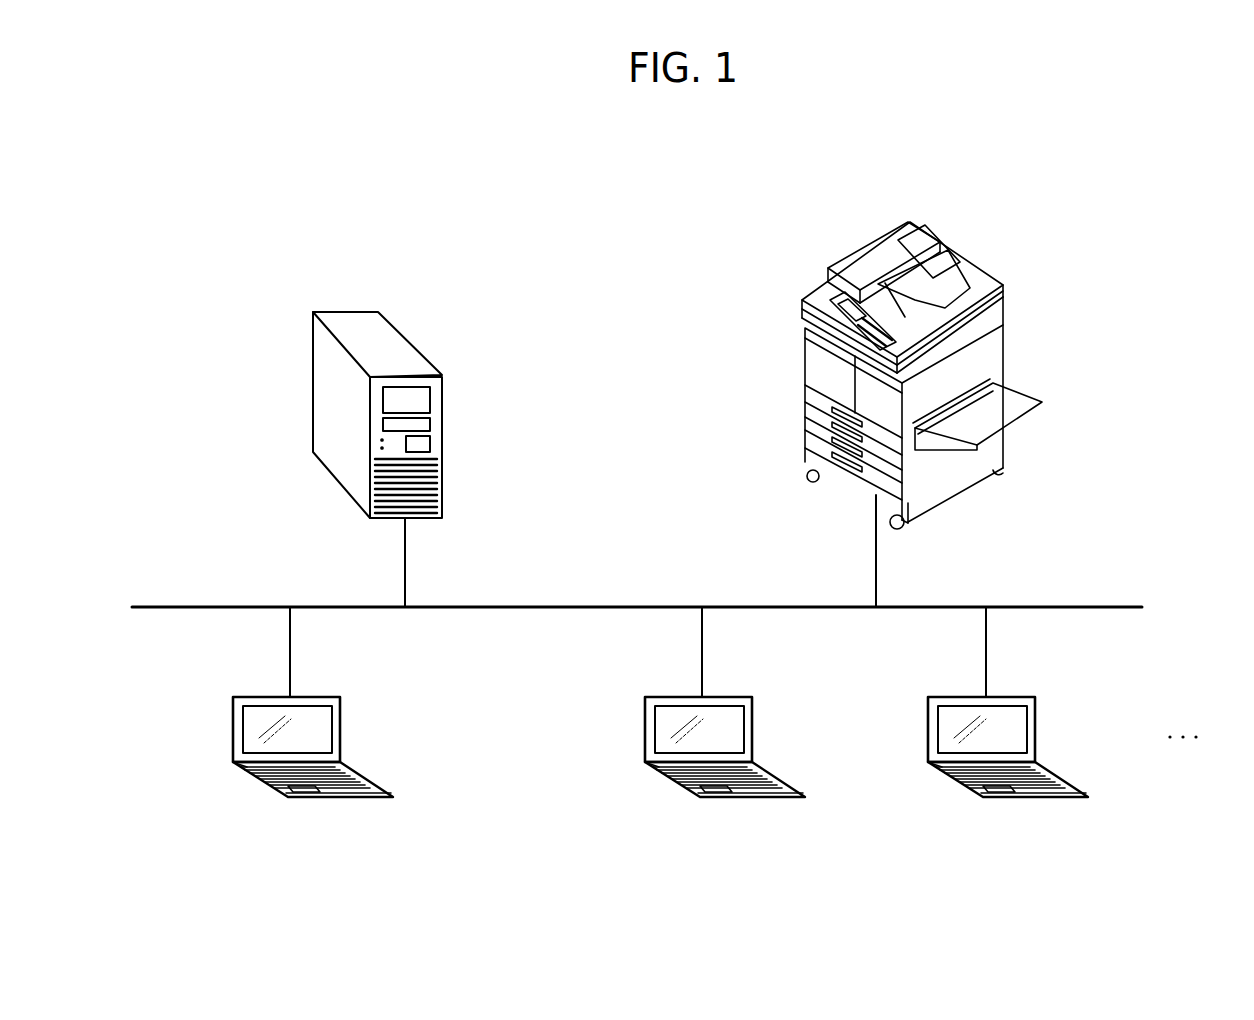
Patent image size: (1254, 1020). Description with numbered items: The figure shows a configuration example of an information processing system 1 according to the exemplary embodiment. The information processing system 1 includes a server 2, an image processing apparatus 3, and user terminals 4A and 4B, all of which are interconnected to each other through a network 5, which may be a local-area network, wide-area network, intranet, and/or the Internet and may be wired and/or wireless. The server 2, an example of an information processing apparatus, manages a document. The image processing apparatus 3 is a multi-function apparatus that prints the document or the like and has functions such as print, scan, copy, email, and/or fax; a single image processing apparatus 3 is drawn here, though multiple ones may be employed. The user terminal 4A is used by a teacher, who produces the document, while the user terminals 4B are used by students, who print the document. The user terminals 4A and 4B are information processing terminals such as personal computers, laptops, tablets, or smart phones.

The information processing system 1 is at (912, 160).
The server 2 is at (338, 311).
The image processing apparatus 3 is at (1006, 343).
The user terminal 4A is at (327, 800).
The user terminals 4B is at (808, 794).
The network 5 is at (1091, 605).